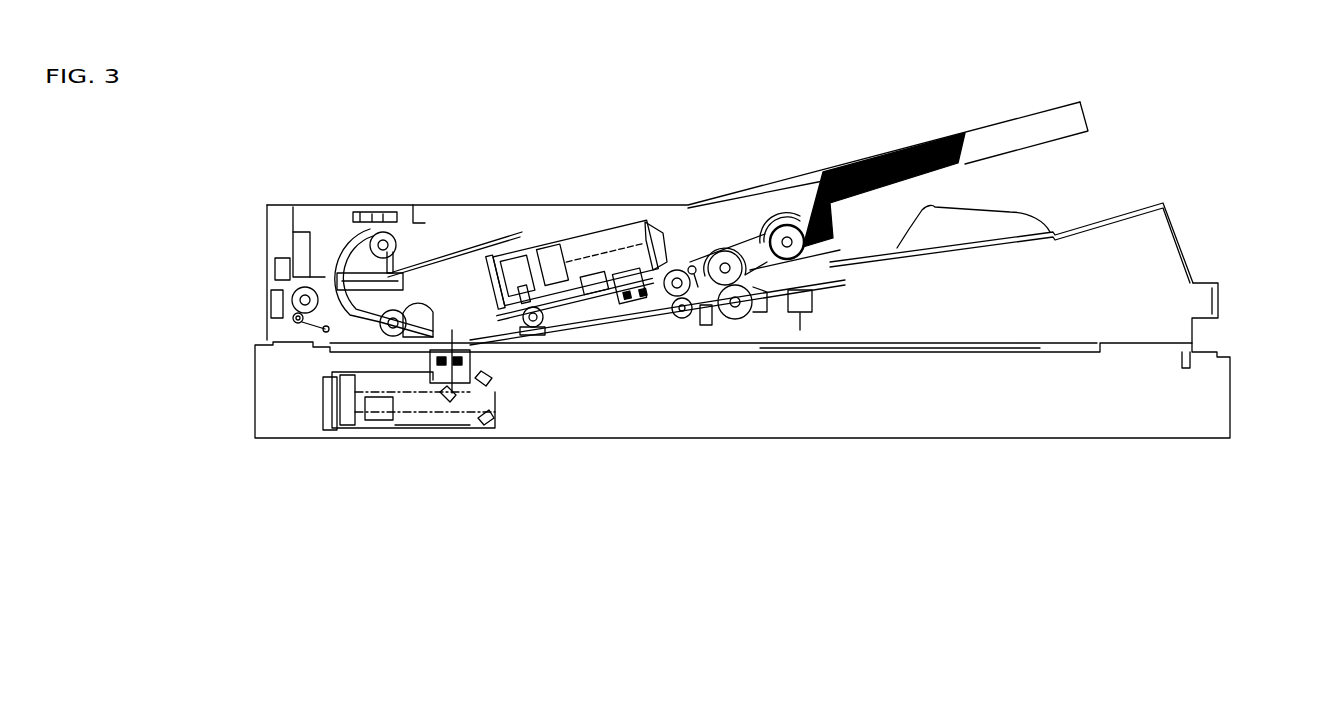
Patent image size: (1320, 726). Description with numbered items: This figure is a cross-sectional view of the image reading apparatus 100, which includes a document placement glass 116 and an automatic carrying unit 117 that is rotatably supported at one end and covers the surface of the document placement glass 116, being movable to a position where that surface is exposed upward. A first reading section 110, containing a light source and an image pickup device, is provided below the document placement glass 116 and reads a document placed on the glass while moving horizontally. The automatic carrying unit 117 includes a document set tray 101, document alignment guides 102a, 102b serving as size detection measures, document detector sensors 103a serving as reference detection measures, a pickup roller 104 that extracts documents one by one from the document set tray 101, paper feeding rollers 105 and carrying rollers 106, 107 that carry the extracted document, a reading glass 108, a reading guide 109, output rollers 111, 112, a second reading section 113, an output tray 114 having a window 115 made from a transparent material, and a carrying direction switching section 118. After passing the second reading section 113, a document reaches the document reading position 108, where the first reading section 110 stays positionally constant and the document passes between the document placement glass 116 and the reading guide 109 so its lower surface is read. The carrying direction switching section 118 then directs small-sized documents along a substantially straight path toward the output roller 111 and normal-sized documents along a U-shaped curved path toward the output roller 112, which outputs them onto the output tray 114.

The image reading apparatus 100 is at (1240, 110).
The document set tray 101 is at (828, 292).
The document alignment guide 102a is at (1011, 231).
The document alignment guide 102b is at (1010, 215).
The document detector sensor 103a is at (835, 415).
The pickup roller 104 is at (789, 236).
The paper feeding roller 105 is at (712, 302).
The carrying roller 106 is at (672, 298).
The carrying roller 107 is at (513, 330).
The reading glass 108 is at (473, 356).
The reading guide 109 is at (455, 330).
The first reading section 110 is at (385, 427).
The output roller 111 is at (295, 313).
The output roller 112 is at (395, 238).
The second reading section 113 is at (667, 233).
The output tray 114 is at (1088, 116).
The window 115 is at (903, 150).
The document placement glass 116 is at (1023, 357).
The automatic carrying unit 117 is at (1055, 261).
The carrying direction switching section 118 is at (358, 320).